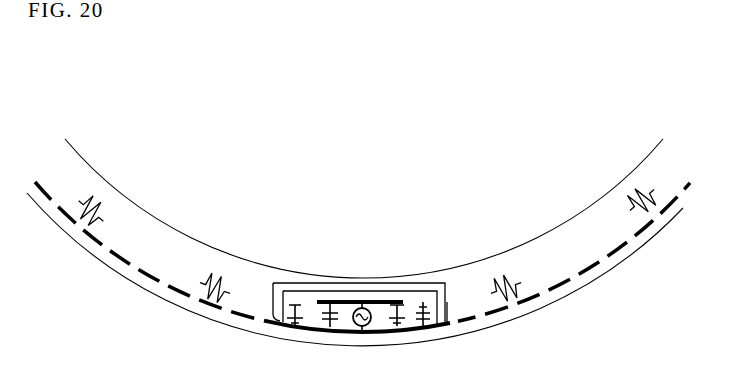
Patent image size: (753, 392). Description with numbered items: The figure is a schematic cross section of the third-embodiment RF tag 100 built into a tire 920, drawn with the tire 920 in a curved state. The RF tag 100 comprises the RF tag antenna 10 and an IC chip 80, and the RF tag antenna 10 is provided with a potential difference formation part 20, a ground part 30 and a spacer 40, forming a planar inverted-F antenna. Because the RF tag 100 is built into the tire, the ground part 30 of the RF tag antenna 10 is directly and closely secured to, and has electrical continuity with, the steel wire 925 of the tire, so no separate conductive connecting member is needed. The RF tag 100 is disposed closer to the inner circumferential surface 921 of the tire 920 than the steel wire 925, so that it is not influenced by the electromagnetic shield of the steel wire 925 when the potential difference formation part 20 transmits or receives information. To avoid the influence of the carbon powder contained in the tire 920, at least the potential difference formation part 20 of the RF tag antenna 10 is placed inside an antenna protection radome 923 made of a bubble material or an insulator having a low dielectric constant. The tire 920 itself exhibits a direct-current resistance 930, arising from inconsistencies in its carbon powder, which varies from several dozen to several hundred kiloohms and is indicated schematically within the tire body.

The RF tag 100 is at (350, 199).
The RF tag antenna 10 is at (360, 230).
The potential difference formation part 20 is at (320, 301).
The ground part 30 is at (368, 309).
The spacer 40 is at (412, 266).
The IC chip 80 is at (273, 316).
The tire 920 is at (167, 248).
The inner circumferential surface 921 is at (107, 182).
The antenna protection radome 923 is at (447, 302).
The steel wire 925 is at (500, 320).
The direct-current resistance 930 is at (500, 272).